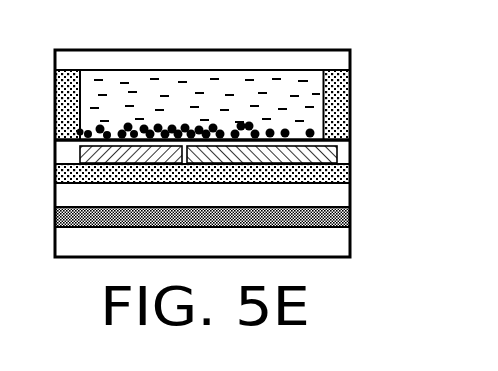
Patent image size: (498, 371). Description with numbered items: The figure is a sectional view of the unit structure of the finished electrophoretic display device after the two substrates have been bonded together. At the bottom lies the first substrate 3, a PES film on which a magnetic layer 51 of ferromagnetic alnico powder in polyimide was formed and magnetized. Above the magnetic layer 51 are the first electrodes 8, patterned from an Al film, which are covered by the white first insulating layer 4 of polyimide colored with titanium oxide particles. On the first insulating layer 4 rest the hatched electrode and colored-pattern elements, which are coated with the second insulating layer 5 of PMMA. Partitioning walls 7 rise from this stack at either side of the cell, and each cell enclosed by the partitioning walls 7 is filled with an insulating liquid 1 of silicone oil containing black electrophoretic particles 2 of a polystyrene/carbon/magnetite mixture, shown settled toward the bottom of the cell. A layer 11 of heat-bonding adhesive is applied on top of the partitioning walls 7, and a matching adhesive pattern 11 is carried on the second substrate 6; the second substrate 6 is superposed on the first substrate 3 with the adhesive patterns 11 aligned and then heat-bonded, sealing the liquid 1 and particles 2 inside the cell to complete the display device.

The insulating liquid 1 is at (222, 85).
The electrophoretic particles 2 is at (140, 120).
The first substrate 3 is at (338, 243).
The first insulating layer 4 is at (345, 173).
The second insulating layer 5 is at (345, 152).
The second substrate 6 is at (302, 63).
The partitioning walls 7 is at (340, 111).
The first electrodes 8 is at (338, 193).
The heat-bonding adhesive layer 11 is at (352, 72).
The magnetic layer 51 is at (338, 221).